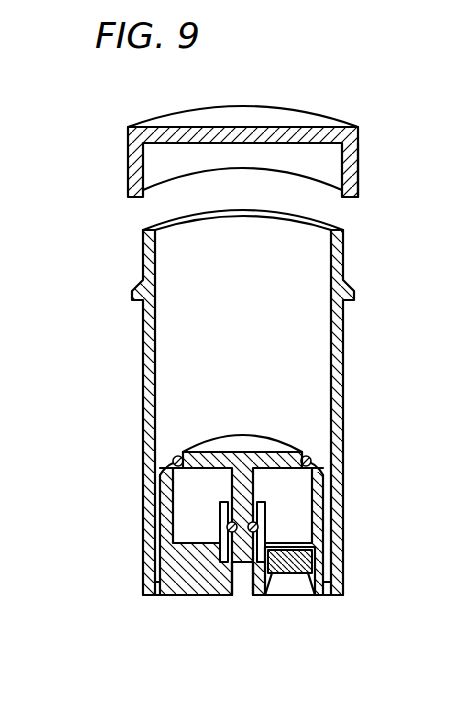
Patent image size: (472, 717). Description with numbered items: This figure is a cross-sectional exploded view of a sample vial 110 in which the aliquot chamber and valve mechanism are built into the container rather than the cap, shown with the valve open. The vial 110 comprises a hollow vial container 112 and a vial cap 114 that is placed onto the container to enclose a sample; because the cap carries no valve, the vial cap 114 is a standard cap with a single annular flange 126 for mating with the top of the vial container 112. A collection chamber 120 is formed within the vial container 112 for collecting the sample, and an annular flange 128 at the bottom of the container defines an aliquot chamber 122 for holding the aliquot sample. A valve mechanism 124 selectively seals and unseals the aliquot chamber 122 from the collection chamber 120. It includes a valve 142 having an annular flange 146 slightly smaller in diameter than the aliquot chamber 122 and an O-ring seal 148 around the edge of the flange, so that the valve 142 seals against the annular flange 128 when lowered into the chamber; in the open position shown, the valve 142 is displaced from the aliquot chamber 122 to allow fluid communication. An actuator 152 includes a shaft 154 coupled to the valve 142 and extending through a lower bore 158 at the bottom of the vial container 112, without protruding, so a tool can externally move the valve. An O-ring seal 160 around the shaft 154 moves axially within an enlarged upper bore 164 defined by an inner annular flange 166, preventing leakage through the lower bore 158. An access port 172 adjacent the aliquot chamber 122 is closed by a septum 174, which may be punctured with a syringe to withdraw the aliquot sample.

The sample vial 110 is at (91, 291).
The vial container 112 is at (343, 242).
The vial cap 114 is at (311, 115).
The collection chamber 120 is at (308, 347).
The aliquot chamber 122 is at (295, 500).
The valve mechanism 124 is at (245, 439).
The annular flange 126 is at (352, 174).
The annular flange 128 is at (312, 462).
The valve 142 is at (277, 439).
The annular flange 146 is at (212, 443).
The O-ring seal 148 is at (176, 459).
The actuator 152 is at (243, 571).
The shaft 154 is at (243, 482).
The lower bore 158 is at (237, 572).
The O-ring seal 160 is at (259, 527).
The upper bore 164 is at (222, 578).
The inner annular flange 166 is at (220, 505).
The access port 172 is at (290, 585).
The septum 174 is at (310, 556).